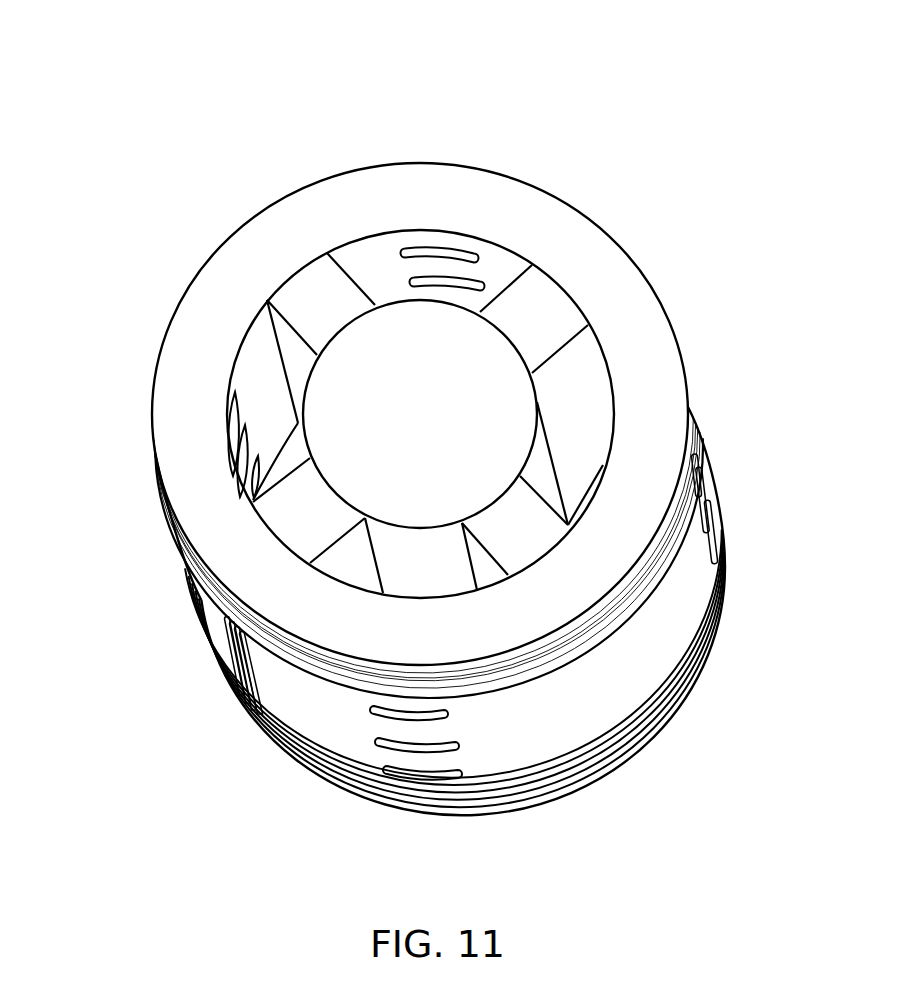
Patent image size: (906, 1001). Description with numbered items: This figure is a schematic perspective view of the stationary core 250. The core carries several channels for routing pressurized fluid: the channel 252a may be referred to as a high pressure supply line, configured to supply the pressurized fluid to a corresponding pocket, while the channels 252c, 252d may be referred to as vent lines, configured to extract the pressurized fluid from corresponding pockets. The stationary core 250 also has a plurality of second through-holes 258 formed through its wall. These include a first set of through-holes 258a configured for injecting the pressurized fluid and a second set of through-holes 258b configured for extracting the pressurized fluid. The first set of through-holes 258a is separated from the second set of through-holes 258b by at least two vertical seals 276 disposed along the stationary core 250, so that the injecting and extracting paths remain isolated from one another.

The stationary core 250 is at (437, 431).
The channel 252a is at (362, 231).
The channel 252c is at (455, 582).
The channel 252d is at (585, 396).
The plurality of second through-holes 258 is at (437, 479).
The first set of through-holes 258a is at (445, 248).
The second set of through-holes 258b is at (703, 457).
The vertical seals 276 is at (624, 243).